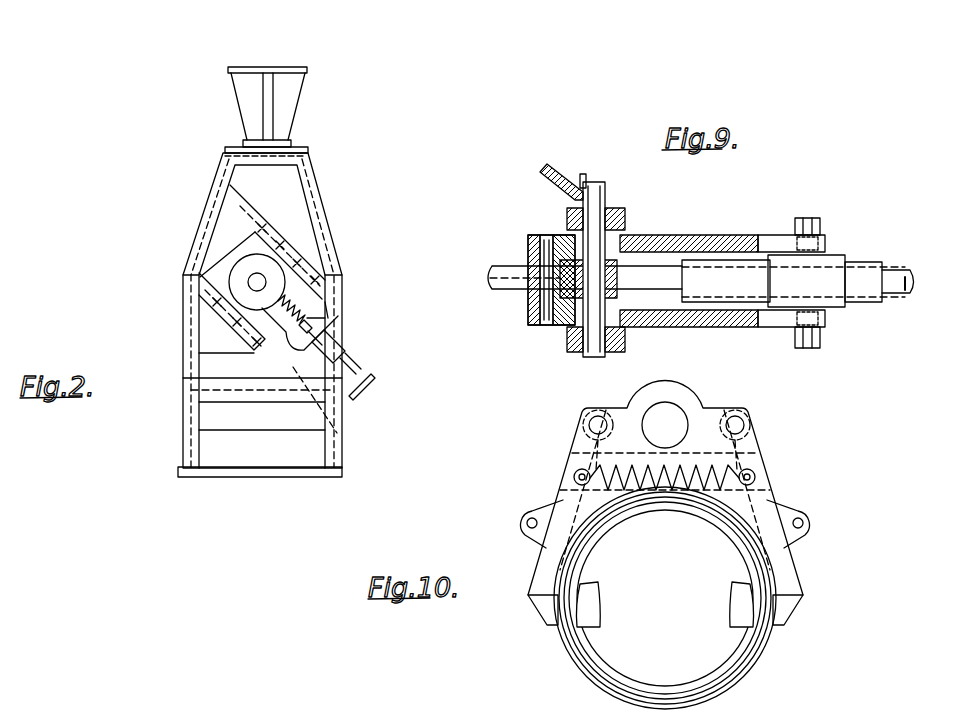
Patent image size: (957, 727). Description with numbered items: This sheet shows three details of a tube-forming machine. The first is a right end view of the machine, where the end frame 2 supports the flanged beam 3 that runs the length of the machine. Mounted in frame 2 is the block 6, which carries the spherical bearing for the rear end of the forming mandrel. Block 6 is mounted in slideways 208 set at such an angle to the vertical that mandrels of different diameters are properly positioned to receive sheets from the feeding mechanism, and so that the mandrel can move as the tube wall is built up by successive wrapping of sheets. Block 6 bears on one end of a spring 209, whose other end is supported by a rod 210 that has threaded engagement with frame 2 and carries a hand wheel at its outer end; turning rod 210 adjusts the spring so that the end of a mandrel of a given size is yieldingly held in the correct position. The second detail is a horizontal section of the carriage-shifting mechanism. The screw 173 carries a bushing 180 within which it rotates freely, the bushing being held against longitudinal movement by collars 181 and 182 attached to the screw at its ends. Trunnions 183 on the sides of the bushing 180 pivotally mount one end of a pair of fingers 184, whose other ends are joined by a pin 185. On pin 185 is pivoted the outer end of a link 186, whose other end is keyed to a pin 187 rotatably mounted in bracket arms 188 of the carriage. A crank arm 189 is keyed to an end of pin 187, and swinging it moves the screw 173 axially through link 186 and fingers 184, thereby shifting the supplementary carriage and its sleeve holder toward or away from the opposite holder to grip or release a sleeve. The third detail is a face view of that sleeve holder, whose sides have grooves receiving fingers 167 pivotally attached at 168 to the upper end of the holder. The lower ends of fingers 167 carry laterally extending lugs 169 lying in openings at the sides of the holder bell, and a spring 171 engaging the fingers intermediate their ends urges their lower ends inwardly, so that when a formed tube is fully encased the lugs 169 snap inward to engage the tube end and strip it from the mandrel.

In FIG. 2, the frame 2 is at (183, 300).
In FIG. 2, the flanged beam 3 is at (291, 67).
In FIG. 2, the block 6 is at (240, 263).
In FIG. 2, the slideways 208 is at (293, 248).
In FIG. 2, the spring 209 is at (302, 316).
In FIG. 2, the rod 210 is at (322, 342).
In FIG. 9, the screw 173 is at (502, 276).
In FIG. 9, the bushing 180 is at (837, 255).
In FIG. 9, the collar 181 is at (874, 262).
In FIG. 9, the collar 182 is at (718, 302).
In FIG. 9, the trunnions 183 is at (827, 240).
In FIG. 9, the fingers 184 is at (738, 237).
In FIG. 9, the pin 185 is at (546, 244).
In FIG. 9, the link 186 is at (572, 293).
In FIG. 9, the pin 187 is at (595, 245).
In FIG. 9, the bracket arms 188 is at (617, 210).
In FIG. 9, the crank arm 189 is at (559, 172).
In FIG. 10, the fingers 167 is at (556, 495).
In FIG. 10, the pivot 168 is at (598, 418).
In FIG. 10, the lugs 169 is at (725, 618).
In FIG. 10, the spring 171 is at (677, 444).